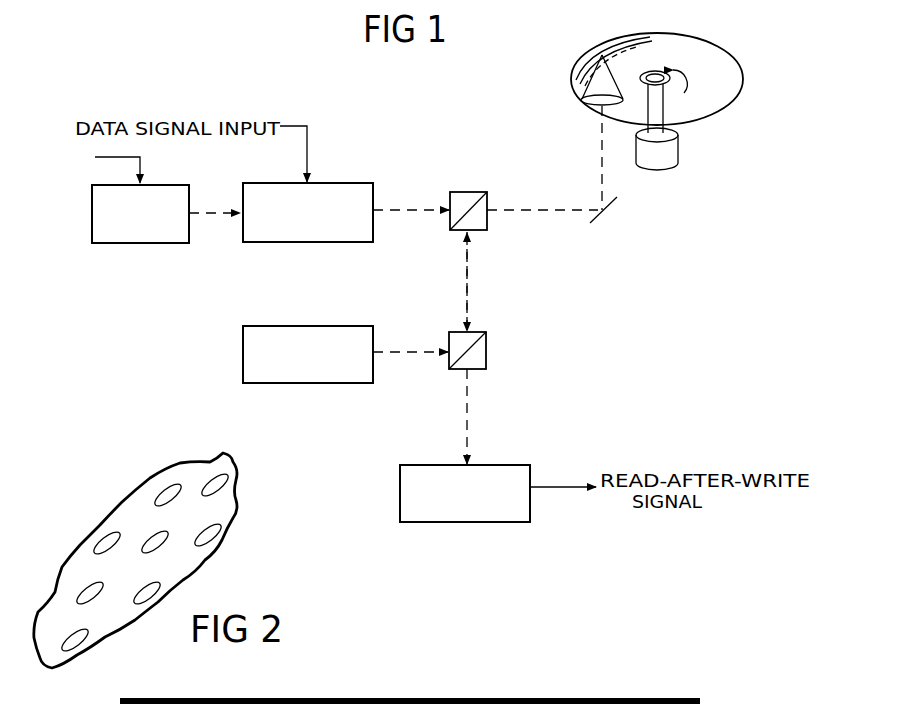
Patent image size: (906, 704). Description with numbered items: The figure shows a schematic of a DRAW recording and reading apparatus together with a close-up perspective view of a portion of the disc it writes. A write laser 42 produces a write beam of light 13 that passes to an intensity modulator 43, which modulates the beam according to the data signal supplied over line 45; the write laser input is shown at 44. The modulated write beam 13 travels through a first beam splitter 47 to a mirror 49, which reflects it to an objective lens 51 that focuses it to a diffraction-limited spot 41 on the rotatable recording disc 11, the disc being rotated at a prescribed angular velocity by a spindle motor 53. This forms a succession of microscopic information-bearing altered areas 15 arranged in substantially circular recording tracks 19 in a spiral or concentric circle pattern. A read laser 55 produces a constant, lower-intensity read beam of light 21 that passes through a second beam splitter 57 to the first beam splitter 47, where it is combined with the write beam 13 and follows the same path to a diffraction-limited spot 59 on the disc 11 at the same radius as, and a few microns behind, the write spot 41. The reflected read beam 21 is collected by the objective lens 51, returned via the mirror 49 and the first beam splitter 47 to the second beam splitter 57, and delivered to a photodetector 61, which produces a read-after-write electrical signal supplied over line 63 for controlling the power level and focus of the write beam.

In FIG. 1, the rotatable recording disc 11 is at (705, 100).
In FIG. 1, the write beam of light 13 is at (218, 215).
In FIG. 2, the information-bearing altered areas 15 is at (85, 652).
In FIG. 2, the recording tracks 19 is at (241, 452).
In FIG. 1, the read beam of light 21 is at (410, 352).
In FIG. 1, the diffraction-limited spot 41 is at (604, 52).
In FIG. 1, the write laser 42 is at (155, 243).
In FIG. 1, the intensity modulator 43 is at (298, 242).
In FIG. 1, the write laser input 44 is at (118, 157).
In FIG. 1, the line 45 is at (307, 124).
In FIG. 1, the first beam splitter 47 is at (470, 192).
In FIG. 1, the mirror 49 is at (603, 212).
In FIG. 1, the objective lens 51 is at (590, 105).
In FIG. 1, the spindle motor 53 is at (655, 170).
In FIG. 1, the read laser 55 is at (243, 359).
In FIG. 1, the second beam splitter 57 is at (487, 352).
In FIG. 1, the diffraction-limited spot 59 is at (597, 55).
In FIG. 1, the photodetector 61 is at (432, 522).
In FIG. 1, the line 63 is at (557, 487).